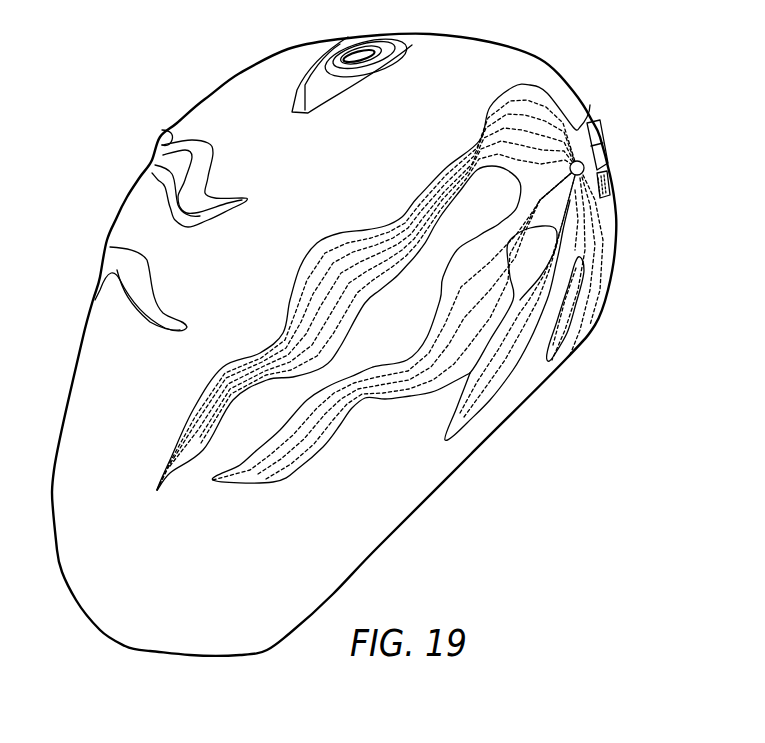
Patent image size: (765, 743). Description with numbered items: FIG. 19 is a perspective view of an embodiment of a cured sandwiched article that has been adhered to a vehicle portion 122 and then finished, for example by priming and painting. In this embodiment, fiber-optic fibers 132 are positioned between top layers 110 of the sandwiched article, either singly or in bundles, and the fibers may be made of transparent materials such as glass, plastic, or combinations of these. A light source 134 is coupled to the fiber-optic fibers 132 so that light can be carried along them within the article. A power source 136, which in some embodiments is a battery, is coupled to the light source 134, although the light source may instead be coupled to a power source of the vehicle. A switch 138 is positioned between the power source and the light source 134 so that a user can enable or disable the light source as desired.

The top layers 110 is at (267, 485).
The vehicle portion 122 is at (517, 57).
The fiber-optic fibers 132 is at (583, 318).
The light source 134 is at (580, 162).
The power source 136 is at (610, 200).
The switch 138 is at (600, 137).